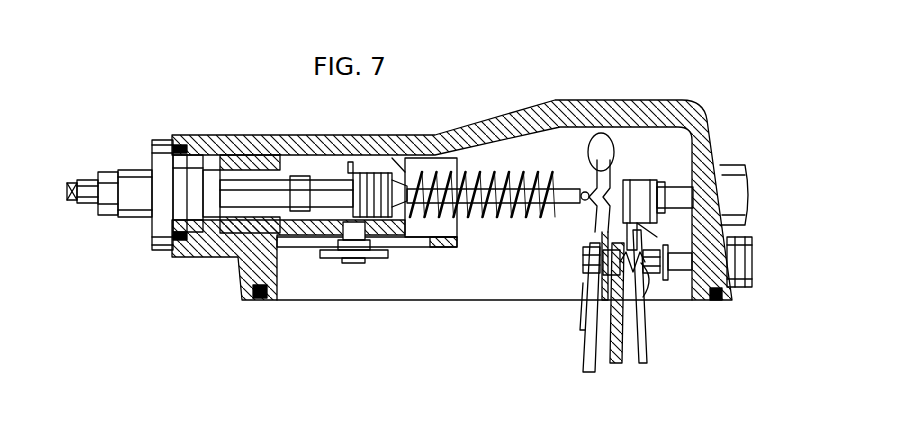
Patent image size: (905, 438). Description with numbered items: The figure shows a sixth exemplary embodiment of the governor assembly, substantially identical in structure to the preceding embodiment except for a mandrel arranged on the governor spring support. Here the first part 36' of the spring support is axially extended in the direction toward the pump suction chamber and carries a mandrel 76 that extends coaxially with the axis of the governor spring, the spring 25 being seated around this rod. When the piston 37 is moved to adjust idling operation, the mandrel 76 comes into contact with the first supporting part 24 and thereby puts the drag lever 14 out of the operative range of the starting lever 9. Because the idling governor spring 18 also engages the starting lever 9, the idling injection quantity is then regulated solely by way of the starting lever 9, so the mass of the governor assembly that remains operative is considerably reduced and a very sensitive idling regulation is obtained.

The starting lever 9 is at (588, 353).
The drag lever 14 is at (617, 349).
The idling governor spring 18 is at (647, 275).
The first supporting part 24 is at (586, 185).
The spring 25 is at (522, 216).
The first part 36' is at (315, 182).
The piston 37 is at (303, 158).
The mandrel 76 is at (481, 216).